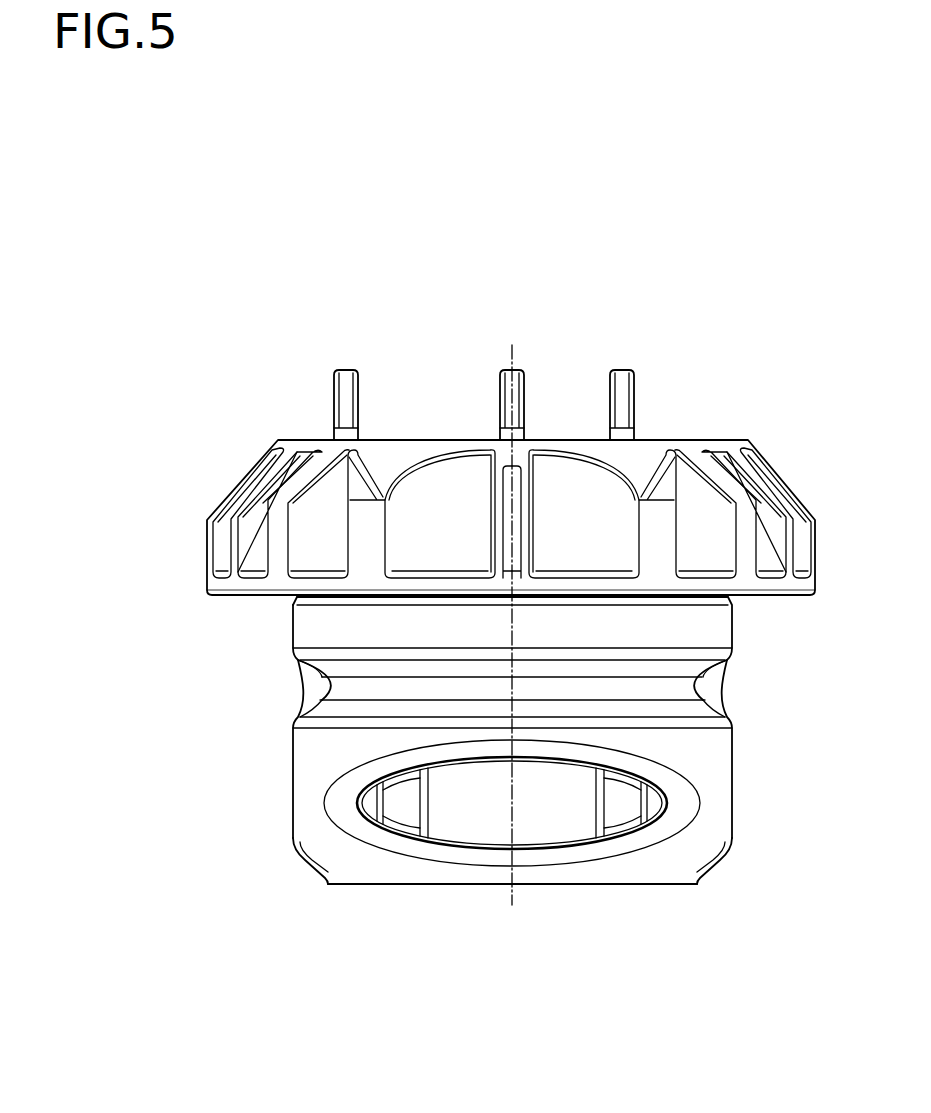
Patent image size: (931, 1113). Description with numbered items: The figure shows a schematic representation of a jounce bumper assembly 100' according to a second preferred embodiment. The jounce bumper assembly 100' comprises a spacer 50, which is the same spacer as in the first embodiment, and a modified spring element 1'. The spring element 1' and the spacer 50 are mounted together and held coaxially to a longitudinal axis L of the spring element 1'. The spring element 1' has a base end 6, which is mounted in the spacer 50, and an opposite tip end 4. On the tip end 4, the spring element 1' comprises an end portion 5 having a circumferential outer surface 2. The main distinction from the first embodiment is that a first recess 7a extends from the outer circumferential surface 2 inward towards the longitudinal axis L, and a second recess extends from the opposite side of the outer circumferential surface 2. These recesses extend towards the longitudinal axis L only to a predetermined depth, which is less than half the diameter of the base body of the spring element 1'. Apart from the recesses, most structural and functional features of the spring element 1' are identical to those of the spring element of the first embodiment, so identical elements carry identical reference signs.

The jounce bumper assembly 100' is at (487, 588).
The base end 6 is at (412, 389).
The spacer 50 is at (290, 447).
The end portion 5 is at (237, 731).
The first recess 7a is at (468, 810).
The longitudinal axis L is at (513, 905).
The circumferential outer surface 2 is at (652, 862).
The tip end 4 is at (346, 929).
The spring element 1' is at (486, 830).